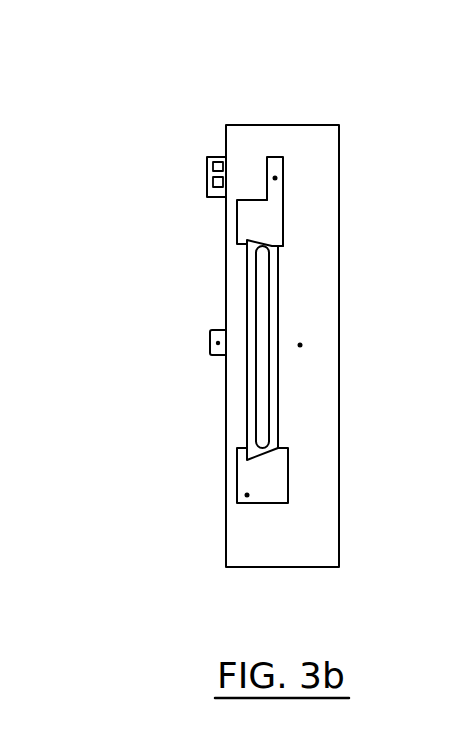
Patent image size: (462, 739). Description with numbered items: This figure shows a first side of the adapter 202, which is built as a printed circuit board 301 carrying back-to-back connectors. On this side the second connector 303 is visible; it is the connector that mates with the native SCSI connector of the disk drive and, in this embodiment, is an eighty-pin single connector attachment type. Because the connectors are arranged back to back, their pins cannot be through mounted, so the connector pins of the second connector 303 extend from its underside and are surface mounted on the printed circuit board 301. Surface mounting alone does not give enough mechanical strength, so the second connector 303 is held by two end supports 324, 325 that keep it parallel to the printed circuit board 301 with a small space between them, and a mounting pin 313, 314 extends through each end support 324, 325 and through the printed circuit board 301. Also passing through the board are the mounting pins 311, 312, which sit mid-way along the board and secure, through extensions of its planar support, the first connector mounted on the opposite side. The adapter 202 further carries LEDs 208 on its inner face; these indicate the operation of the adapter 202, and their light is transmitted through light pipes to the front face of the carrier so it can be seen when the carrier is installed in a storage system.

The adapter 202 is at (179, 82).
The LEDs 208 is at (207, 166).
The printed circuit board 301 is at (240, 542).
The second connector 303 is at (279, 305).
The mounting pin 311 is at (216, 343).
The mounting pin 312 is at (300, 345).
The mounting pin 313 is at (275, 178).
The mounting pin 314 is at (245, 495).
The end support 324 is at (283, 223).
The end support 325 is at (288, 480).